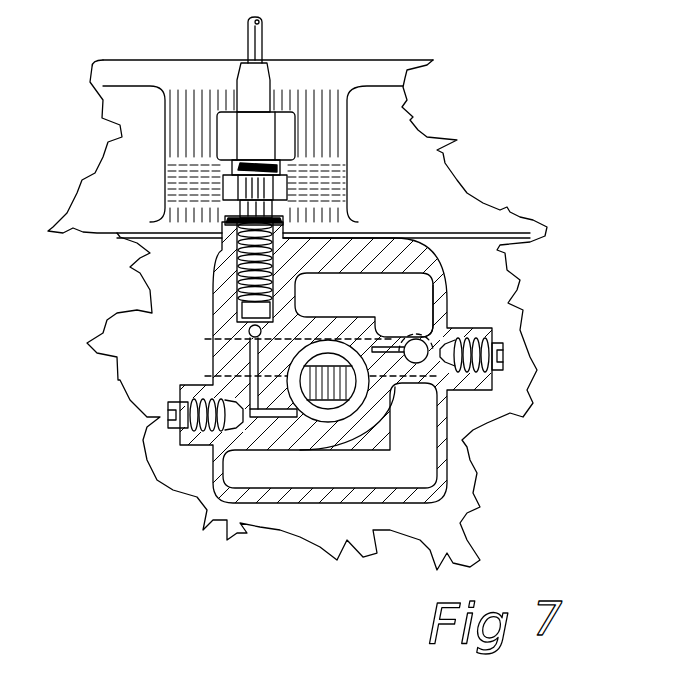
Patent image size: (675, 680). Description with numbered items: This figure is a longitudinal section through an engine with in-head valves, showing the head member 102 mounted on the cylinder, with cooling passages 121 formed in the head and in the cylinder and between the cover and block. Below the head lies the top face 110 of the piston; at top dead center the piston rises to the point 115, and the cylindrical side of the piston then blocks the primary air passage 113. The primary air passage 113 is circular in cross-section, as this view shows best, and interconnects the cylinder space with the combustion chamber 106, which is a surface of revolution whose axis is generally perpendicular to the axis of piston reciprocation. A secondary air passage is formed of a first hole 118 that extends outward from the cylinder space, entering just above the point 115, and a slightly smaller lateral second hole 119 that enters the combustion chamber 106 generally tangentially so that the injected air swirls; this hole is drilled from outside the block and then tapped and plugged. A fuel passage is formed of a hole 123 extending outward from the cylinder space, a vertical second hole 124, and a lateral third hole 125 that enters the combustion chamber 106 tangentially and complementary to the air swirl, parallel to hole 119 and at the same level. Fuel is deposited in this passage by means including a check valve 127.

The head member 102 is at (422, 143).
The check valve 127 is at (243, 43).
The top face of piston 110 is at (220, 375).
The hole 123 is at (244, 324).
The point 115 is at (247, 328).
The vertical second hole 124 is at (247, 410).
The lateral third hole 125 is at (297, 418).
The primary air passage 113 is at (343, 340).
The first hole 118 is at (420, 318).
The second hole 119 is at (400, 349).
The combustion chamber 106 is at (366, 390).
The cooling passages 121 is at (302, 481).